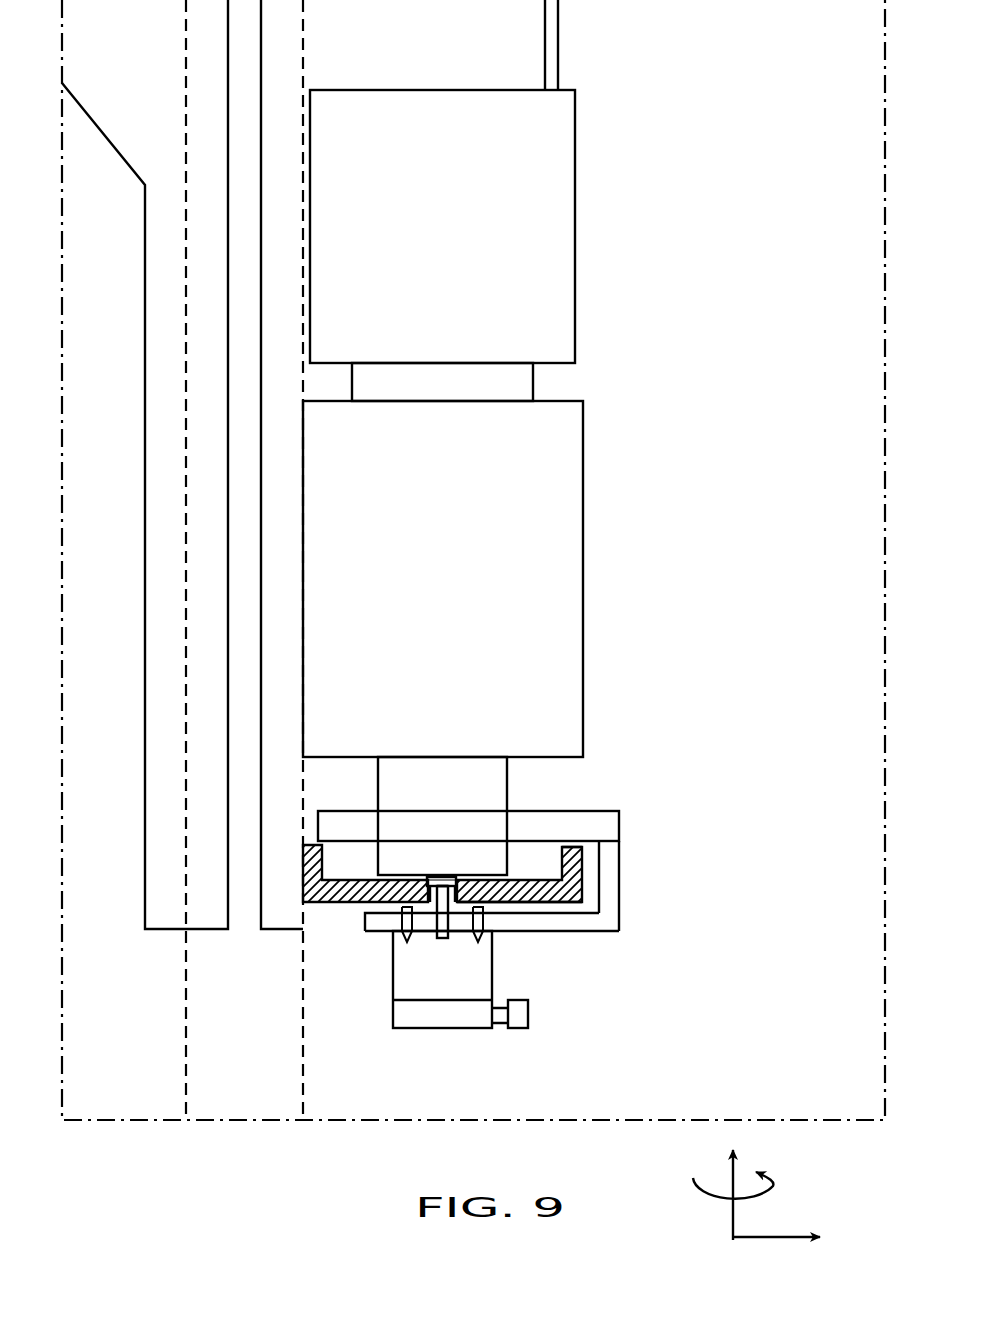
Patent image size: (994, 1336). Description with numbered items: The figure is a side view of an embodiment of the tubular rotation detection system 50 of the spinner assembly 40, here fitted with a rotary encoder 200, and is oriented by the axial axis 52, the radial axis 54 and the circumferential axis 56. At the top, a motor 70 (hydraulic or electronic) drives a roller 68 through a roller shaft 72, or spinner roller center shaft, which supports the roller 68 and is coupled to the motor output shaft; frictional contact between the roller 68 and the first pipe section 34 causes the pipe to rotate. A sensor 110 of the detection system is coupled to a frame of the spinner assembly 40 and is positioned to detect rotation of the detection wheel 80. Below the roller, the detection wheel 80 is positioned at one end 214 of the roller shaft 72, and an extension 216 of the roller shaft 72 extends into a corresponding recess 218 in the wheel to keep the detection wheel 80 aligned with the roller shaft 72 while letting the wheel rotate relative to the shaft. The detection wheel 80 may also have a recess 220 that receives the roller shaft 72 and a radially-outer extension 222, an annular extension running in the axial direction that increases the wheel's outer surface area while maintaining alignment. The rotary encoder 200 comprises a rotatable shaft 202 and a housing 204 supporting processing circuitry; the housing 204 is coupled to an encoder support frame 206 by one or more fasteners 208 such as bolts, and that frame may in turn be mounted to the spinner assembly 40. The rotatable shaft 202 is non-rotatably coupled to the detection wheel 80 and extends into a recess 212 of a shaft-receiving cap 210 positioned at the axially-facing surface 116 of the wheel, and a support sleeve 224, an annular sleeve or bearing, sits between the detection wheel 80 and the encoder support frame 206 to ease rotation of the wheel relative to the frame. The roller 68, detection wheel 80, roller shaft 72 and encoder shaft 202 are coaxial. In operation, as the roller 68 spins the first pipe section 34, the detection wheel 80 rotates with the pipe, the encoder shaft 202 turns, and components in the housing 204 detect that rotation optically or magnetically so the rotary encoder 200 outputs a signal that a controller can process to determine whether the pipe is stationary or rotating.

The first pipe section 34 is at (303, 1027).
The spinner assembly 40 is at (515, 181).
The tubular rotation detection system 50 is at (502, 574).
The axial axis 52 is at (733, 1215).
The radial axis 54 is at (770, 1238).
The circumferential axis 56 is at (767, 1197).
The roller 68 is at (548, 630).
The motor 70 is at (562, 160).
The roller shaft 72 is at (524, 387).
The detection wheel 80 is at (541, 860).
The sensor 110 is at (663, 757).
The axially-facing surface 116 is at (562, 903).
The rotary encoder 200 is at (500, 1005).
The rotatable shaft 202 is at (442, 935).
The housing 204 is at (440, 993).
The encoder support frame 206 is at (622, 898).
The fastener 208 is at (478, 925).
The shaft-receiving cap 210 is at (536, 905).
The recess 212 is at (425, 886).
The end 214 is at (456, 882).
The extension 216 is at (433, 878).
The recess 218 is at (445, 877).
The recess 220 is at (562, 858).
The radially-outer extension 222 is at (570, 892).
The support sleeve 224 is at (433, 937).